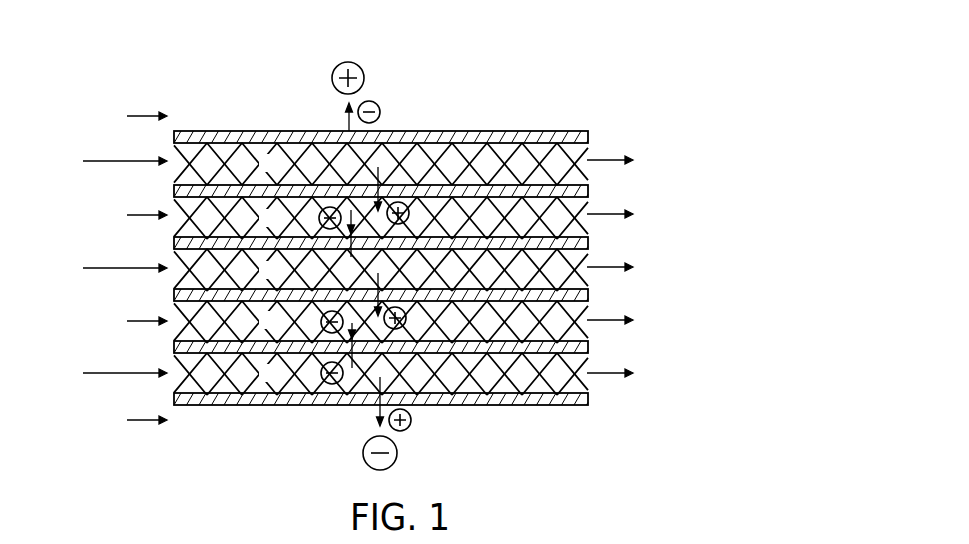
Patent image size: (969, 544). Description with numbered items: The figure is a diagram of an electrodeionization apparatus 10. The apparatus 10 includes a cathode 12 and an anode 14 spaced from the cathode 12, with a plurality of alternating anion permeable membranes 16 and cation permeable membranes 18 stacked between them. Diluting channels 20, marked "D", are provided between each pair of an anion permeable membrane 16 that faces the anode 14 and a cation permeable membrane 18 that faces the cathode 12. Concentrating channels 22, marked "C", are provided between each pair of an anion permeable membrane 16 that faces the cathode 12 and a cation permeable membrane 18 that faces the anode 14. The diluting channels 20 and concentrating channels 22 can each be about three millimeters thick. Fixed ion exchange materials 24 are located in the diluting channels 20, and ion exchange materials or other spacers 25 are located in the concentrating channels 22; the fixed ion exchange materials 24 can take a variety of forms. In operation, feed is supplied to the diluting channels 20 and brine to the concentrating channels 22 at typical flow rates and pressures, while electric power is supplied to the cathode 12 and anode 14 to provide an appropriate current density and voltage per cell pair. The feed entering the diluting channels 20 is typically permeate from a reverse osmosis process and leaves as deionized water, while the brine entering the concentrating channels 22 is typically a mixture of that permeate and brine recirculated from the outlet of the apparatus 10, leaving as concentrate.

The electrodeionization apparatus 10 is at (630, 70).
The cathode 12 is at (397, 452).
The anode 14 is at (364, 75).
The anion permeable membrane 16 is at (432, 131).
The cation permeable membrane 18 is at (590, 190).
The diluting channel 20 is at (430, 265).
The concentrating channel 22 is at (355, 266).
The fixed ion exchange material 24 is at (502, 264).
The spacer 25 is at (210, 206).